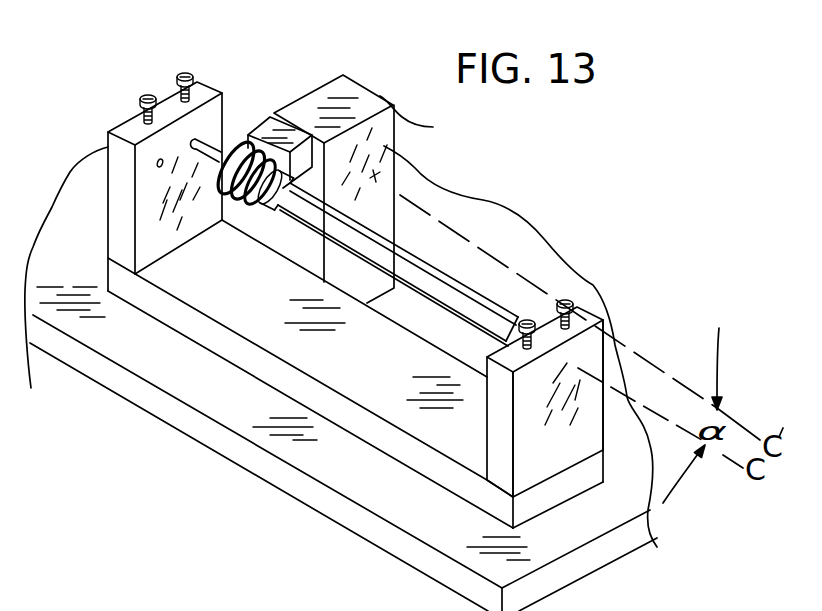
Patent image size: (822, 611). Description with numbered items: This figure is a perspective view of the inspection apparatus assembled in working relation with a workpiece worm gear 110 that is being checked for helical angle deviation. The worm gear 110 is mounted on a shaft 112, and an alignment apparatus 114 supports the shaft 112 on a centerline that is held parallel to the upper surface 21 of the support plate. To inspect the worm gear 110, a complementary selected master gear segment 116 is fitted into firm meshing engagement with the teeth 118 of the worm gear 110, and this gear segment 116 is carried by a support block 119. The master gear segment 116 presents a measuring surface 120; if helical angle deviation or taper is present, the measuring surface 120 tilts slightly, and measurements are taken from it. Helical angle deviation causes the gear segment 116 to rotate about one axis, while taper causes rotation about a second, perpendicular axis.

The upper surface 21 is at (465, 555).
The workpiece worm gear 110 is at (264, 197).
The shaft 112 is at (440, 298).
The alignment apparatus 114 is at (557, 462).
The master gear segment 116 is at (266, 117).
The teeth 118 is at (240, 140).
The support block 119 is at (433, 127).
The measuring surface 120 is at (276, 113).